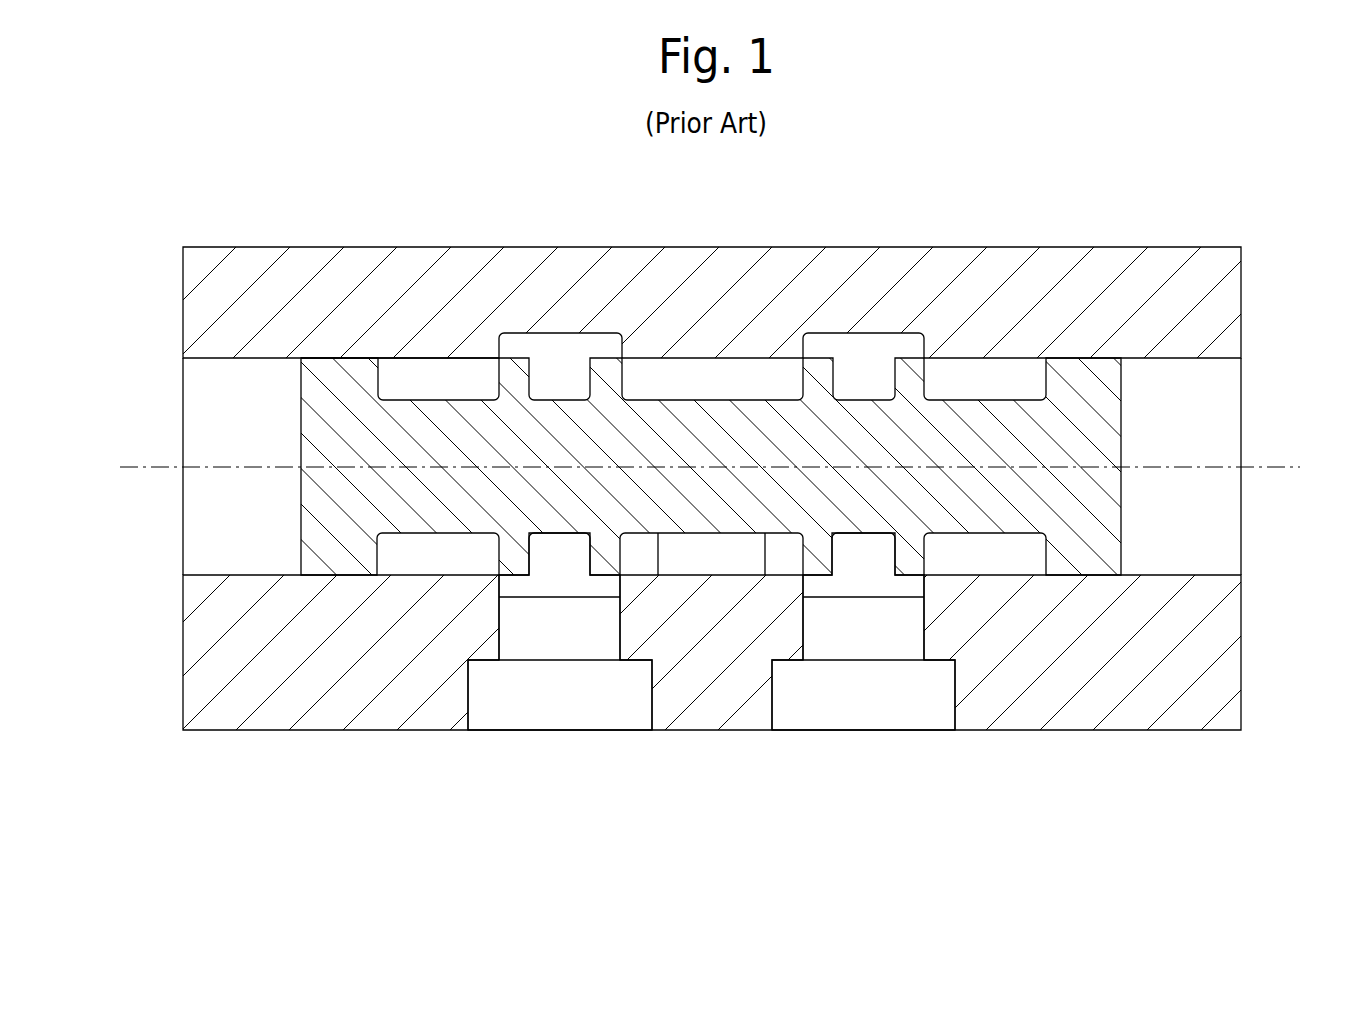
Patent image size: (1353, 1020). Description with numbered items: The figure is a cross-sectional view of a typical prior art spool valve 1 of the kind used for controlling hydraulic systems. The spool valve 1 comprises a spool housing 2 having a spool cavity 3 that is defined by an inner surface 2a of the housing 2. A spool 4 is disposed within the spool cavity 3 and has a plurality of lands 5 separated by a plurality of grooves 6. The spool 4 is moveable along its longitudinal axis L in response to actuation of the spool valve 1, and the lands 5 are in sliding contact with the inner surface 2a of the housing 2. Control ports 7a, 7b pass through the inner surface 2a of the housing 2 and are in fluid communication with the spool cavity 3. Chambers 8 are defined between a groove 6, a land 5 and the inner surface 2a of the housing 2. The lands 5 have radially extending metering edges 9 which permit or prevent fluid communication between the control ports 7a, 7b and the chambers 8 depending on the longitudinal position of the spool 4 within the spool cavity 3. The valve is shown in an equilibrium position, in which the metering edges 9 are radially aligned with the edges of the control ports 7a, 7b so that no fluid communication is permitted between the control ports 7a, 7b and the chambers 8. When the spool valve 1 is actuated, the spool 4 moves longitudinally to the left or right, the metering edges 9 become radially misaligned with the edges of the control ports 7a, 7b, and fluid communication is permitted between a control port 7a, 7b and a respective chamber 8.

The spool valve 1 is at (188, 176).
The spool housing 2 is at (293, 283).
The inner surface 2a is at (435, 358).
The spool cavity 3 is at (208, 392).
The spool 4 is at (722, 443).
The lands 5 is at (909, 380).
The grooves 6 is at (1008, 397).
The control port 7a is at (573, 693).
The control port 7b is at (873, 698).
The chambers 8 is at (433, 560).
The metering edges 9 is at (497, 550).
The longitudinal axis L is at (711, 467).